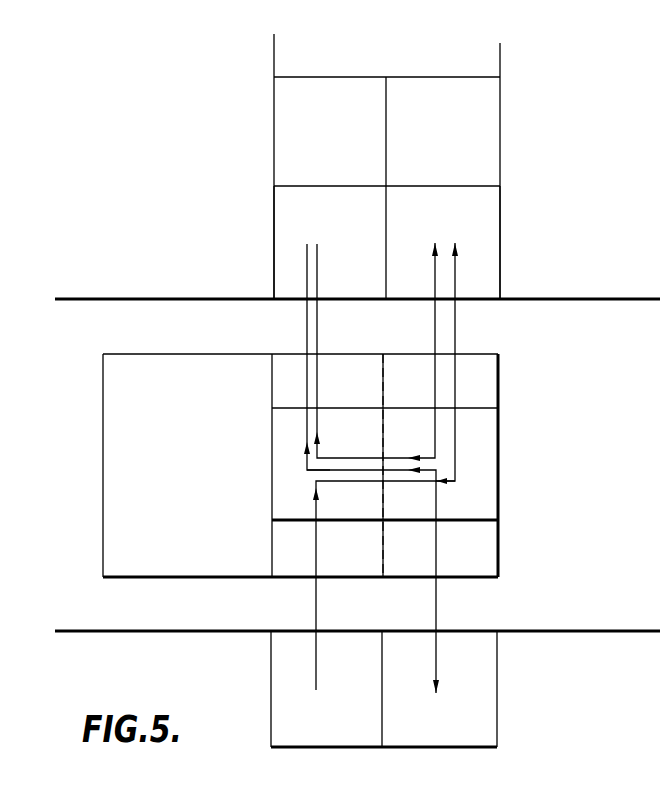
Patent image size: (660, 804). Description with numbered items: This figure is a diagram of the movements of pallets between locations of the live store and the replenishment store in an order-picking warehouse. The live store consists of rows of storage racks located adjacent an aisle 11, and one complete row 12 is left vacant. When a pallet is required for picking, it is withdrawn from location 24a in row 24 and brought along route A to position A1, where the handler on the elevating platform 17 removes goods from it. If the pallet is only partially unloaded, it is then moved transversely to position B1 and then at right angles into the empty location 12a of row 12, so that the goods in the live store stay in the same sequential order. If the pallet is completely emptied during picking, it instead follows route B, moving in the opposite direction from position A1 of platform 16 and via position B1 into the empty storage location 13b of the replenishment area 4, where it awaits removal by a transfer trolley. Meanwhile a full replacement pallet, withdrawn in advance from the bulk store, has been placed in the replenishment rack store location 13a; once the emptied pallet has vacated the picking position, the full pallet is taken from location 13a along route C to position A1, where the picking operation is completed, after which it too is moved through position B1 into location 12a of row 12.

The row 24 is at (274, 58).
The vacant row 12 is at (501, 60).
The location 24a is at (274, 251).
The empty location 12a is at (490, 252).
The aisle 11 is at (202, 331).
The elevating platform 17 is at (215, 459).
The platform 16 is at (498, 479).
The replenishment rack store location 13a is at (271, 705).
The empty storage location 13b is at (480, 705).
The replenishment rack 4 is at (497, 742).
The route A is at (320, 280).
The route B is at (307, 331).
The route C is at (314, 604).
The picking position A1 is at (306, 490).
The position B1 is at (490, 479).